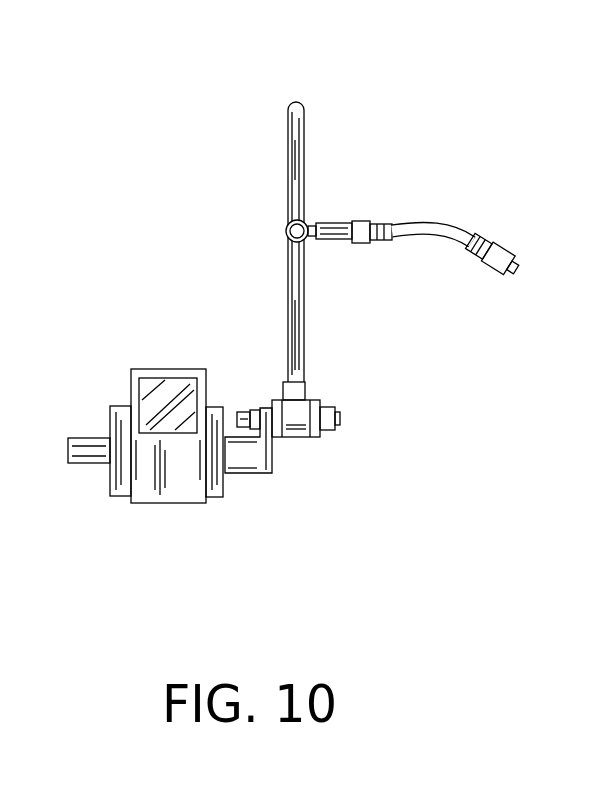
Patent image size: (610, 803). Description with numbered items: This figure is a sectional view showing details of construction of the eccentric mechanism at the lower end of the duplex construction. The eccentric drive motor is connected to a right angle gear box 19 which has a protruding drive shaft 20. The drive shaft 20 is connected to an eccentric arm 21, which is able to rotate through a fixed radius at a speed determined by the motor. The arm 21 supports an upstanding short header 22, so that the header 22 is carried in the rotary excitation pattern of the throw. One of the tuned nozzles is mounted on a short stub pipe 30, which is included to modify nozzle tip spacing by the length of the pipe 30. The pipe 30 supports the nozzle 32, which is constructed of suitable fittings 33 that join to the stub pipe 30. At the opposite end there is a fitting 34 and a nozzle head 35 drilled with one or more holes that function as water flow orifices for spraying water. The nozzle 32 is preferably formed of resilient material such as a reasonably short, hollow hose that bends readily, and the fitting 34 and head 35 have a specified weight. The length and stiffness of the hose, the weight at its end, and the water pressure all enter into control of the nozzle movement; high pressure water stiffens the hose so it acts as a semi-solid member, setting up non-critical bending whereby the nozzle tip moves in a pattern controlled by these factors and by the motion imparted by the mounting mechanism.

The right angle gear box 19 is at (130, 368).
The drive shaft 20 is at (261, 475).
The eccentric arm 21 is at (247, 406).
The short header 22 is at (286, 287).
The stub pipe 30 is at (336, 212).
The nozzle 32 is at (417, 247).
The fittings 33 is at (376, 223).
The fitting 34 is at (494, 241).
The nozzle head 35 is at (497, 273).